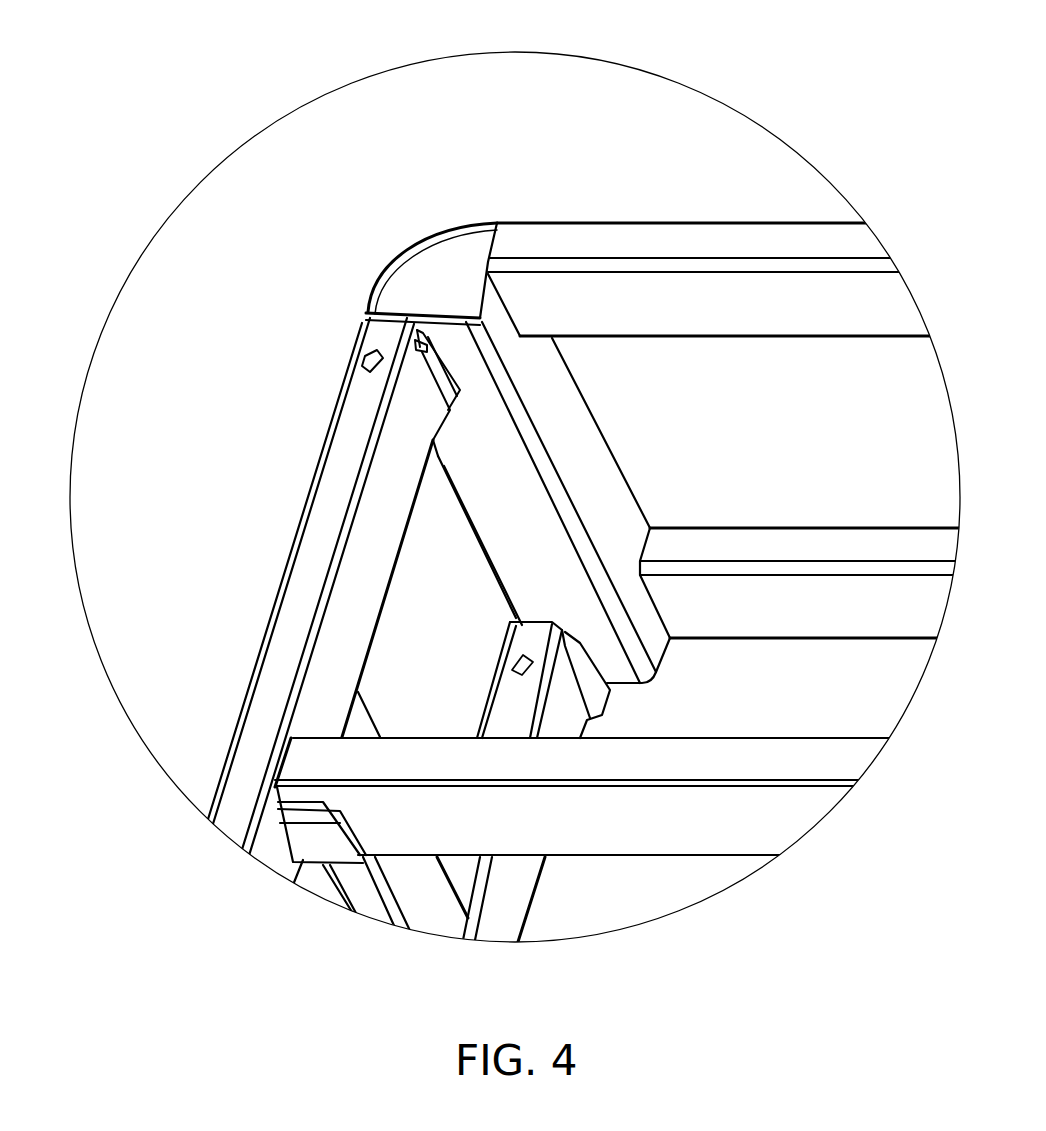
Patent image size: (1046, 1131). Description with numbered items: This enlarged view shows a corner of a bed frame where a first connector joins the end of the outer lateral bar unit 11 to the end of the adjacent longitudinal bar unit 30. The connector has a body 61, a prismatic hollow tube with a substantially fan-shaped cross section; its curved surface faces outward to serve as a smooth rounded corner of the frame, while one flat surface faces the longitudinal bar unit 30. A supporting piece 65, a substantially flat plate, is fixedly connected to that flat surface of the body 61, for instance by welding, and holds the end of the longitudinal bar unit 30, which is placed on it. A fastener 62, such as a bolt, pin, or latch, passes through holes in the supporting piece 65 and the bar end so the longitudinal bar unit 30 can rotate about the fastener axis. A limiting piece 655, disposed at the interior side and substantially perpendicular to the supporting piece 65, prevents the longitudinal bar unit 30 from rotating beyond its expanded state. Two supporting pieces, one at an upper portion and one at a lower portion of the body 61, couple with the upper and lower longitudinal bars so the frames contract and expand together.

The outer lateral bar unit 11 is at (730, 223).
The adjacent longitudinal bar unit 30 is at (275, 660).
The body 61 is at (430, 243).
The fastener 62 is at (365, 355).
The supporting piece 65 is at (430, 473).
The limiting piece 655 is at (432, 373).